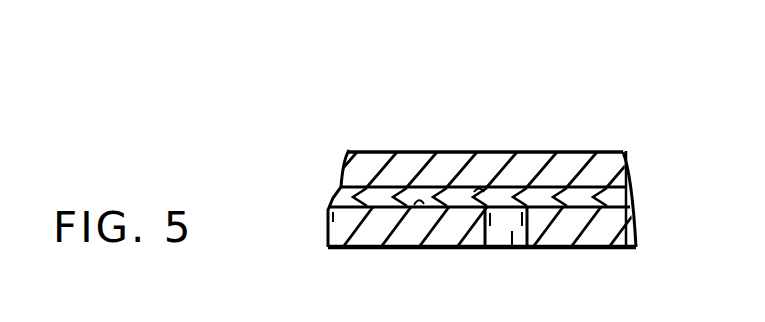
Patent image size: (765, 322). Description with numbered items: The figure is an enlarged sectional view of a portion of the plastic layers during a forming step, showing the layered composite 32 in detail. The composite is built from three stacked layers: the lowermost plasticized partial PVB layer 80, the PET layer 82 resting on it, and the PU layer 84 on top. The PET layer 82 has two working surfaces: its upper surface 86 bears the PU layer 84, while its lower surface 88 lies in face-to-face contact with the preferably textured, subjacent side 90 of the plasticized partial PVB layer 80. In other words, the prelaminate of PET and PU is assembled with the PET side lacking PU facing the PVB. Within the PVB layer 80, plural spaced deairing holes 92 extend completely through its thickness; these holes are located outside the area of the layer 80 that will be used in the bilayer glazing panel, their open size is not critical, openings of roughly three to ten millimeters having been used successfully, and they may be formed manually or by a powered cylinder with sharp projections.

The layered composite 32 is at (593, 74).
The plasticized partial PVB layer 80 is at (343, 236).
The PET layer 82 is at (344, 191).
The PU layer 84 is at (378, 163).
The surface of PET layer 86 is at (485, 193).
The surface of PET layer 88 is at (331, 218).
The subjacent side of plasticized partial PVB layer 90 is at (420, 208).
The deairing holes 92 is at (513, 250).